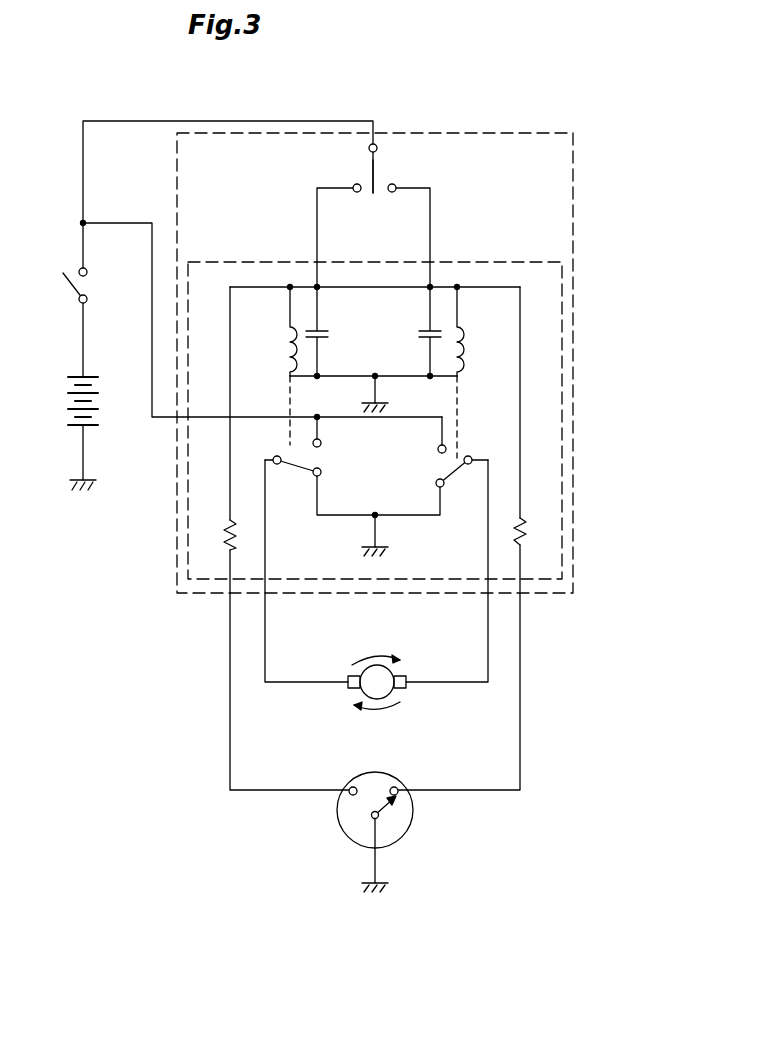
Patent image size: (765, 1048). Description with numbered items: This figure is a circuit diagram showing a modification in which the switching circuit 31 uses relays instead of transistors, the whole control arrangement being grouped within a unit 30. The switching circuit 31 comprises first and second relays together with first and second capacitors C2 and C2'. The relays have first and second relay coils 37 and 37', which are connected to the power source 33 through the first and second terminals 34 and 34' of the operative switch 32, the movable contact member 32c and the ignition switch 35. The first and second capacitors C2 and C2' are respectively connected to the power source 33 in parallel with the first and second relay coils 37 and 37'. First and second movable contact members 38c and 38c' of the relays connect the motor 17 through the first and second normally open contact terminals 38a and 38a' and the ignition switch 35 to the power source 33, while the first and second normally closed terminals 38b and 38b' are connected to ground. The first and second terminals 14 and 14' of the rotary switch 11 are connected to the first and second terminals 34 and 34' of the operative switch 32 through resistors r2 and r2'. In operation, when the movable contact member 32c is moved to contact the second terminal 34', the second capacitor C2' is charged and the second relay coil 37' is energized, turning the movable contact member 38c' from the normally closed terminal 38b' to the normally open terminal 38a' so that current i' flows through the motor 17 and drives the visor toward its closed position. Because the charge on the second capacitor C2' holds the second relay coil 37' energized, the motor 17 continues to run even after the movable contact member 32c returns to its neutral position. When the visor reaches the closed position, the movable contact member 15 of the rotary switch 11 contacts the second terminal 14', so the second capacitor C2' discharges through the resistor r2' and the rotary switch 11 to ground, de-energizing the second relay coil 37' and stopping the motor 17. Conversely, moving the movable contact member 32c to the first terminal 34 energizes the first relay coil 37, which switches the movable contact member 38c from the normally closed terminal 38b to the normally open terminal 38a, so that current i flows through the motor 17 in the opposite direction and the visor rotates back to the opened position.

The ignition switch unit 30 is at (565, 160).
The switching circuit 31 is at (555, 342).
The operative switch 32 is at (389, 197).
The movable contact member 32c is at (374, 168).
The first terminal 34 is at (428, 222).
The second terminal 34' is at (330, 214).
The ignition switch 35 is at (75, 290).
The power source 33 is at (67, 395).
The first relay coil 37 is at (489, 331).
The second relay coil 37' is at (266, 342).
The first capacitor C2 is at (413, 331).
The second capacitor C2' is at (340, 331).
The first normally open contact terminal 38a is at (406, 437).
The second normally open contact terminal 38a' is at (357, 459).
The first normally closed terminal 38b is at (448, 522).
The second normally closed terminal 38b' is at (321, 516).
The first movable contact member 38c is at (477, 447).
The second movable contact member 38c' is at (275, 449).
The resistor r2 is at (537, 532).
The resistor r2' is at (250, 534).
The motor 17 is at (388, 690).
The current i is at (377, 722).
The current i' is at (376, 646).
The rotary switch 11 is at (345, 837).
The movable contact member 15 is at (383, 810).
The first terminal 14 is at (426, 770).
The second terminal 14' is at (333, 766).